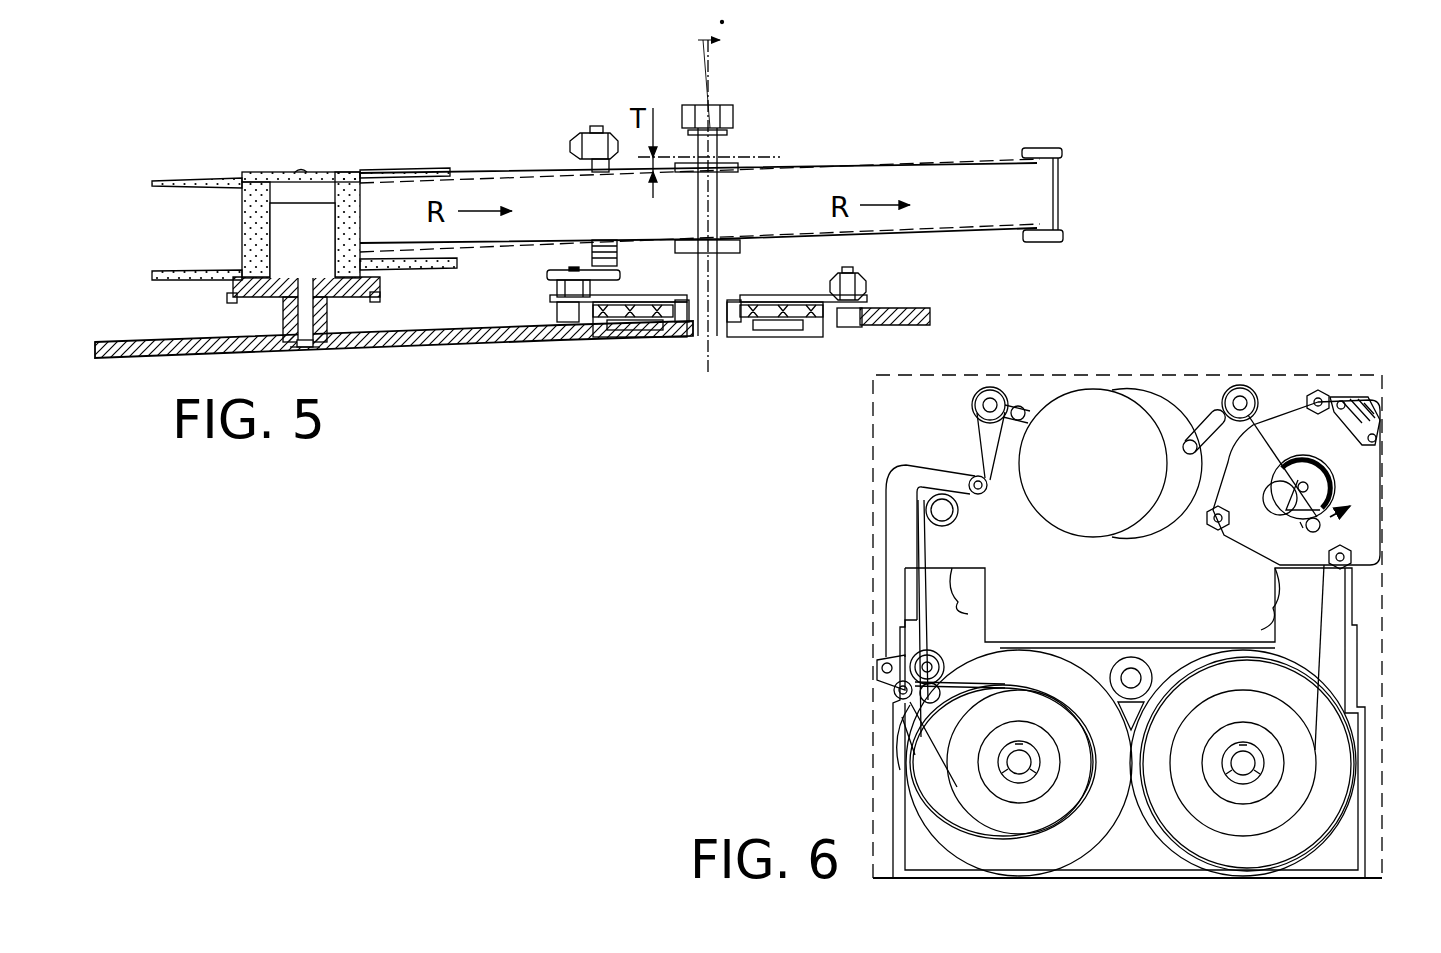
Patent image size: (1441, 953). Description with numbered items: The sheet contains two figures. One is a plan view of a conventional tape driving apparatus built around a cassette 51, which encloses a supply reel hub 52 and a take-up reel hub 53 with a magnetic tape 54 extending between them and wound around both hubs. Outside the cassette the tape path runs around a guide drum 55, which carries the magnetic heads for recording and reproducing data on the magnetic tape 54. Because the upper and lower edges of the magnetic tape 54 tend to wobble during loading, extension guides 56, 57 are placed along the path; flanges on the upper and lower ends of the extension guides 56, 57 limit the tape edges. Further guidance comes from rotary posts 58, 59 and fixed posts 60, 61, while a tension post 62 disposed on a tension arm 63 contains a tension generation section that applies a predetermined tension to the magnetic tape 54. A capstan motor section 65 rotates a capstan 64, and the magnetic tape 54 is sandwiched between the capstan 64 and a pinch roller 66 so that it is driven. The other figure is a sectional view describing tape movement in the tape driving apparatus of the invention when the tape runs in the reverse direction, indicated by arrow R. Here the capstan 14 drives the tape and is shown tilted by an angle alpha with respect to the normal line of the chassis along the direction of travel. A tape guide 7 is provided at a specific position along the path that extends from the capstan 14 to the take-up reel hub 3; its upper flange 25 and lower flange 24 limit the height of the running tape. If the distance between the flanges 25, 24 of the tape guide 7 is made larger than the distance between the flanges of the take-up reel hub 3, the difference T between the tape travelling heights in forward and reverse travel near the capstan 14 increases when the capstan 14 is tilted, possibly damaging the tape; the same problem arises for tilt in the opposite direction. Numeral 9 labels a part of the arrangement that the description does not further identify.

In FIG. 5, the take-up reel hub 3 is at (345, 178).
In FIG. 5, the tape guide 7 is at (577, 246).
In FIG. 5, the arm / beam 9 is at (1043, 150).
In FIG. 5, the capstan 14 is at (713, 282).
In FIG. 5, the lower flange 24 is at (619, 251).
In FIG. 5, the upper flange 25 is at (576, 158).
In FIG. 6, the cassette 51 is at (1360, 678).
In FIG. 6, the supply reel hub 52 is at (1025, 778).
In FIG. 6, the take-up reel hub 53 is at (1265, 775).
In FIG. 6, the magnetic tape 54 is at (976, 440).
In FIG. 6, the guide drum 55 is at (1137, 390).
In FIG. 6, the extension guide 56 is at (958, 514).
In FIG. 6, the extension guide 57 is at (1320, 525).
In FIG. 6, the rotary post 58 is at (985, 387).
In FIG. 6, the rotary post 59 is at (1248, 385).
In FIG. 6, the fixed post 60 is at (1030, 410).
In FIG. 6, the fixed post 61 is at (1195, 440).
In FIG. 6, the tension post 62 is at (945, 466).
In FIG. 6, the tension arm 63 is at (893, 518).
In FIG. 6, the capstan 64 is at (1308, 487).
In FIG. 6, the capstan motor section 65 is at (1365, 464).
In FIG. 6, the pinch roller 66 is at (1273, 516).